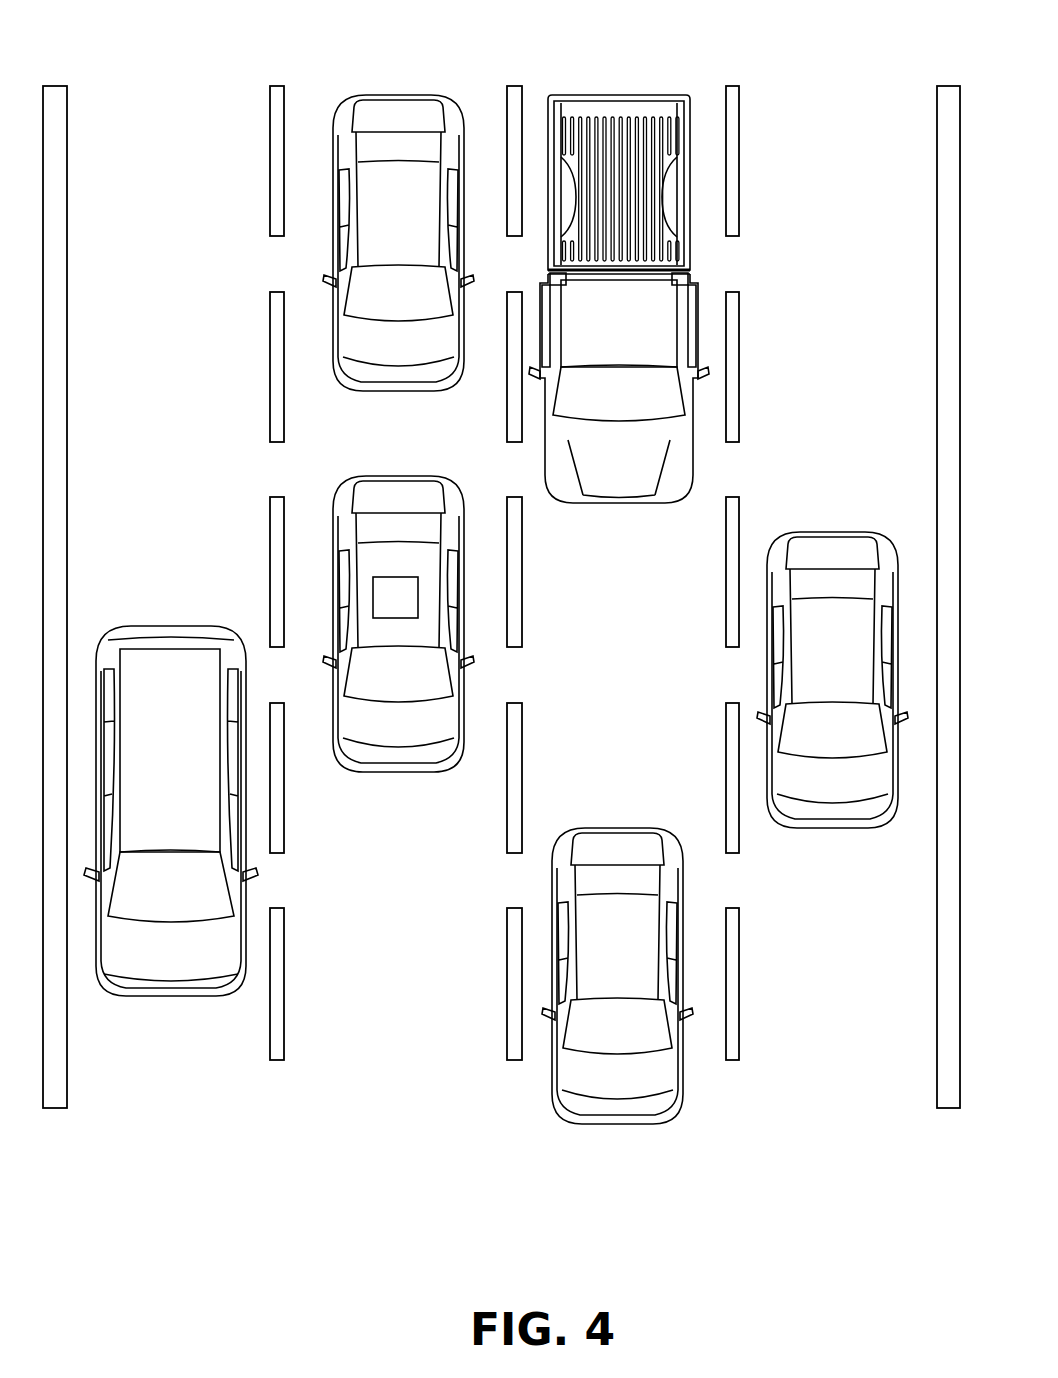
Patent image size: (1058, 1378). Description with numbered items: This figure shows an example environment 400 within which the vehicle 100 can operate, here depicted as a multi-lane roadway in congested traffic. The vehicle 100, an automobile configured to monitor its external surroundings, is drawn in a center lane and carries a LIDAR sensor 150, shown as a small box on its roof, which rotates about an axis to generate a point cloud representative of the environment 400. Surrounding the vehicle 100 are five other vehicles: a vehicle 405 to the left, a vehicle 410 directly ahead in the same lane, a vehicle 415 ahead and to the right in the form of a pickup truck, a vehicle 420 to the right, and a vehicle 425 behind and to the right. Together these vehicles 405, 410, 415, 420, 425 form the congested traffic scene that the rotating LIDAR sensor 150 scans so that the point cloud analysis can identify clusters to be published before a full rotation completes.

The environment 400 is at (478, 30).
The vehicle 100 is at (334, 511).
The LIDAR sensor 150 is at (418, 602).
The vehicle 405 is at (212, 626).
The vehicle 410 is at (338, 114).
The vehicle 415 is at (700, 343).
The vehicle 420 is at (897, 598).
The vehicle 425 is at (675, 852).